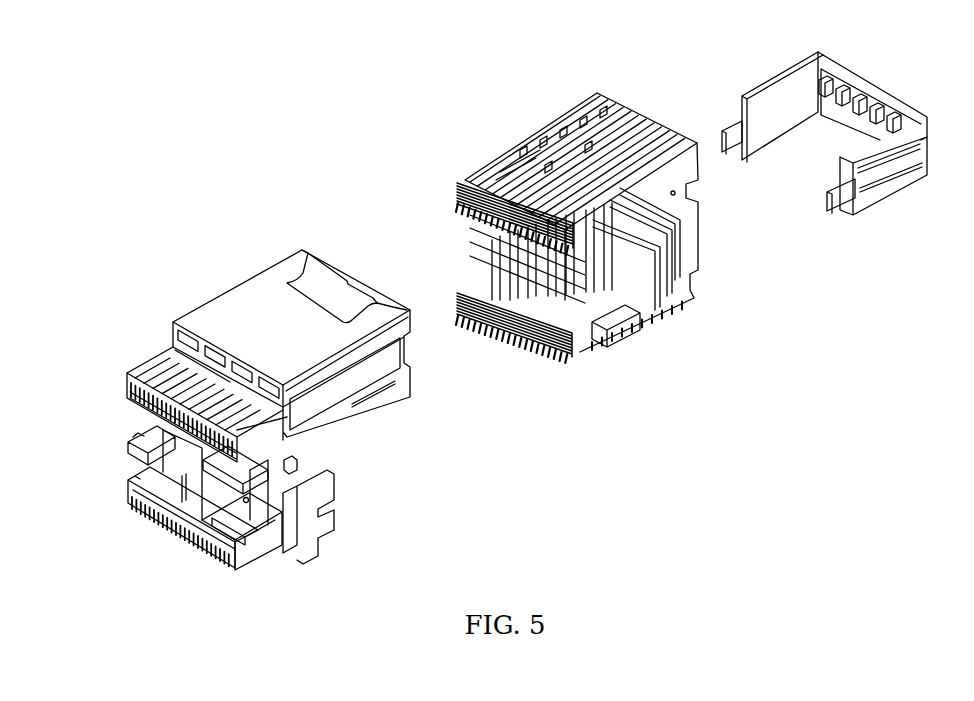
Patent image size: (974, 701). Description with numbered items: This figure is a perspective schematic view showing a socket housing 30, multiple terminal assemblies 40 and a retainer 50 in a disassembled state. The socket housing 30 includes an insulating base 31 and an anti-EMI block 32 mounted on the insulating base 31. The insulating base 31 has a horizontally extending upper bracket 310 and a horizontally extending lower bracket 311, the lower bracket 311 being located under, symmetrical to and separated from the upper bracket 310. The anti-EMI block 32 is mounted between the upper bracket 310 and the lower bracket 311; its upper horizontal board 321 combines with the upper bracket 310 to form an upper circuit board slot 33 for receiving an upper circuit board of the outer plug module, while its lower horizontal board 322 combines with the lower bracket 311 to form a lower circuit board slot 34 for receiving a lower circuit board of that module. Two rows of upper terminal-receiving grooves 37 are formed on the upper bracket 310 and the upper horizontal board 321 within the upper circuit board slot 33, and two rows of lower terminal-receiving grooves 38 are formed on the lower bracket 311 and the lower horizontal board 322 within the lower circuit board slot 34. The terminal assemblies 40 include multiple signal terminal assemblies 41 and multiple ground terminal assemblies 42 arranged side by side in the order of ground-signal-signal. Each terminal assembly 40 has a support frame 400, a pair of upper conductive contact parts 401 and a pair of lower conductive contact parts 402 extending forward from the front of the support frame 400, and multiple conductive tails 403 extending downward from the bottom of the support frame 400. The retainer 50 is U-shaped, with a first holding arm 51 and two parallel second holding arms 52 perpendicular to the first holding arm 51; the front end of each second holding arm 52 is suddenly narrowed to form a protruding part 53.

The socket housing 30 is at (246, 415).
The insulating base 31 is at (273, 280).
The upper bracket 310 is at (163, 362).
The upper terminal-receiving grooves 37 is at (147, 374).
The upper circuit board slot 33 is at (140, 388).
The upper horizontal board 321 is at (147, 412).
The anti-EMI block 32 is at (133, 443).
The lower terminal-receiving grooves 38 is at (128, 480).
The lower circuit board slot 34 is at (133, 492).
The lower horizontal board 322 is at (220, 524).
The lower bracket 311 is at (258, 556).
The support frame 400 is at (549, 219).
The terminal assemblies 40 is at (549, 228).
The ground terminal assemblies 42 is at (543, 140).
The signal terminal assemblies 41 is at (510, 162).
The upper conductive contact parts 401 is at (457, 195).
The lower conductive contact parts 402 is at (457, 298).
The conductive tails 403 is at (598, 342).
The retainer 50 is at (813, 149).
The first holding arm 51 is at (868, 82).
The second holding arms 52 is at (755, 95).
The protruding part 53 is at (732, 142).